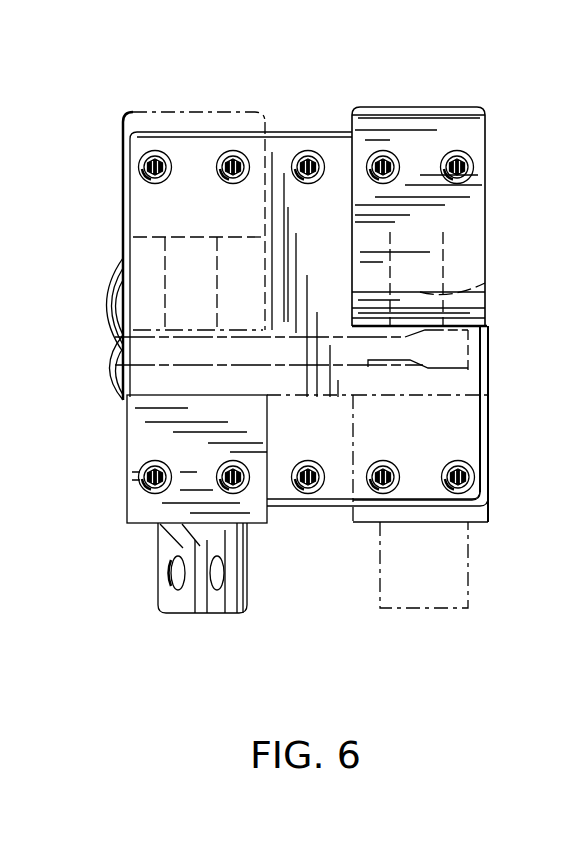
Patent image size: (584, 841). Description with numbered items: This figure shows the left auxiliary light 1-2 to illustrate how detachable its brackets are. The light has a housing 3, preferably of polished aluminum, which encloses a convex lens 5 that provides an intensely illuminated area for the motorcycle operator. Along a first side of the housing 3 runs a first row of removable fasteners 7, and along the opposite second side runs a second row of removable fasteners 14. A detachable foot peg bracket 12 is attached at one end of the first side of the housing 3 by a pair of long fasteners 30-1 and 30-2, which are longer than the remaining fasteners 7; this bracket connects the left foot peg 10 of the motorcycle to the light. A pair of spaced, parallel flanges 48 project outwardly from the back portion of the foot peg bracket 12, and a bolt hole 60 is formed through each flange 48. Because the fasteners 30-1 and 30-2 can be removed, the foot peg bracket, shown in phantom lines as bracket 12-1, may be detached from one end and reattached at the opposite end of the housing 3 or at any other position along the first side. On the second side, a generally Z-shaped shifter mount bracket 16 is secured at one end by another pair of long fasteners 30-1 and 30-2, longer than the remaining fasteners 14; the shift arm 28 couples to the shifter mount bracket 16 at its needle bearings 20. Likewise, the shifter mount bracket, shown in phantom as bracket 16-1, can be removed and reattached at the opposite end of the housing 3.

The left auxiliary light 1-2 is at (514, 326).
The housing 3 is at (490, 380).
The convex lens 5 is at (97, 337).
The removable fasteners 7 is at (305, 458).
The left foot peg 10 is at (103, 480).
The detachable foot peg bracket 12 is at (133, 527).
The foot peg bracket in phantom 12-1 is at (498, 512).
The removable fasteners 14 is at (309, 151).
The shifter mount bracket 16 is at (473, 168).
The shifter mount bracket in phantom 16-1 is at (123, 172).
The needle bearings 20 is at (485, 283).
The shift arm 28 is at (338, 337).
The long fastener 30-1 is at (458, 151).
The long fastener 30-2 is at (386, 151).
The flanges 48 is at (162, 598).
The bolt hole 60 is at (163, 577).